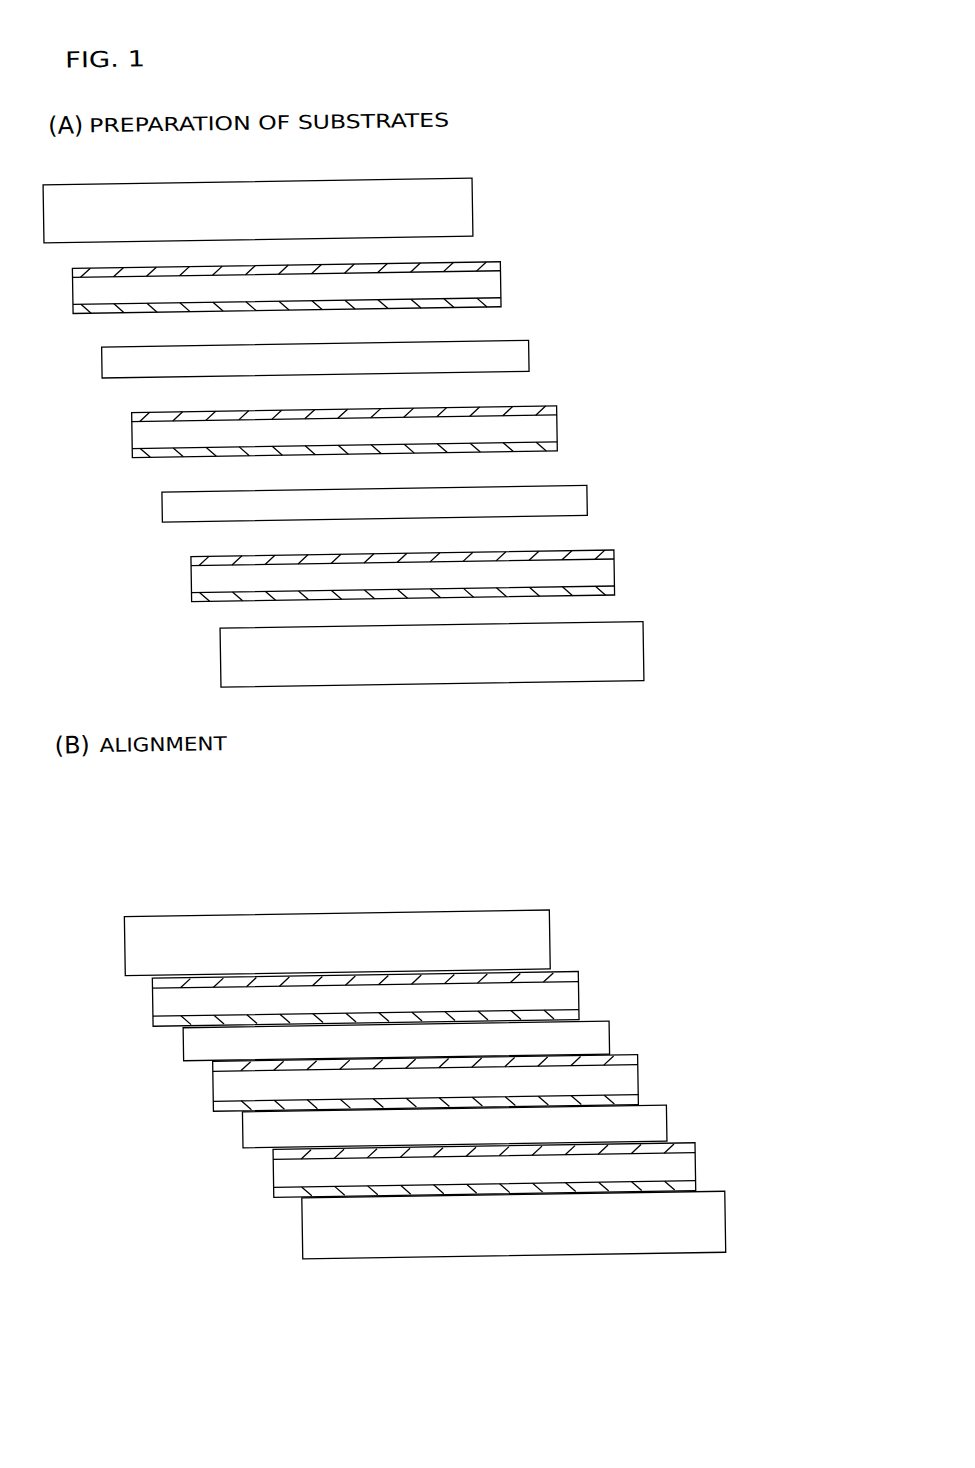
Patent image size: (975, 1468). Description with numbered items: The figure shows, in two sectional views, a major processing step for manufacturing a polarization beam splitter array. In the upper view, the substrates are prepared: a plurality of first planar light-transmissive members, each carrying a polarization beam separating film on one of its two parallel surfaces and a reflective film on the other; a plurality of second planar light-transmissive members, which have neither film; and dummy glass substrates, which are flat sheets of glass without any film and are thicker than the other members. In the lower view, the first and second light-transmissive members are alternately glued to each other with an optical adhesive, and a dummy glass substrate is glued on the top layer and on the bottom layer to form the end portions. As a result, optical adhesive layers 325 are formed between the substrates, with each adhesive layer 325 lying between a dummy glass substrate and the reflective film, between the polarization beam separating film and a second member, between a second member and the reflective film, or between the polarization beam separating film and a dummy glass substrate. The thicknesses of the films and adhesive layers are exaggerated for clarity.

The optical adhesive layer 325 is at (200, 977).